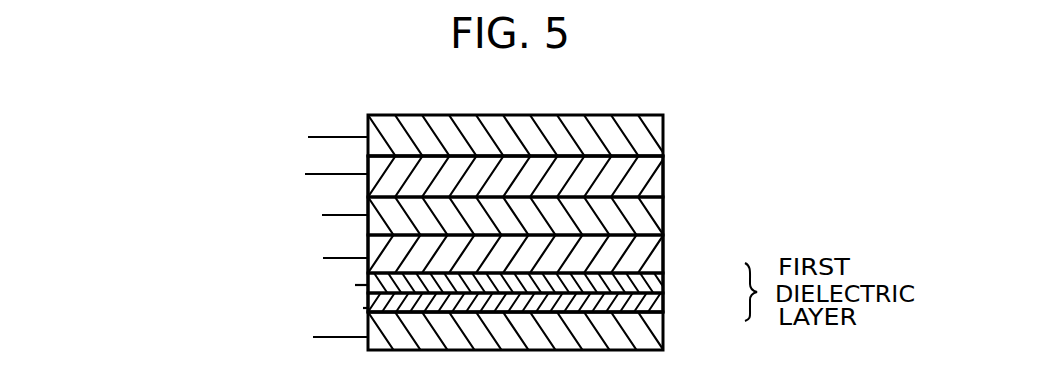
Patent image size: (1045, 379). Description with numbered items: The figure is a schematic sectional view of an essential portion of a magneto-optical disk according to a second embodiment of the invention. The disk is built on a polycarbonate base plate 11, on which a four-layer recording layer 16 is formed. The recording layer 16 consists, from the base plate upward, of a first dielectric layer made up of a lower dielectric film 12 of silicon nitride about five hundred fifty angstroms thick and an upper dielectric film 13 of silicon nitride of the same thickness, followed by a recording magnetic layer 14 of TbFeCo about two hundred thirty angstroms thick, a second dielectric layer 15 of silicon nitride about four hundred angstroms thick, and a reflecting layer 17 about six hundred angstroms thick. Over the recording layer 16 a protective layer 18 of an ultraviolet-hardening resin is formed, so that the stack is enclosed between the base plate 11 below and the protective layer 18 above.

The base plate 11 is at (663, 338).
The lower dielectric film 12 is at (663, 300).
The upper dielectric film 13 is at (663, 283).
The recording magnetic layer 14 is at (663, 253).
The second dielectric layer 15 is at (663, 217).
The recording layer 16 is at (720, 147).
The reflecting layer 17 is at (663, 172).
The protective layer 18 is at (663, 133).